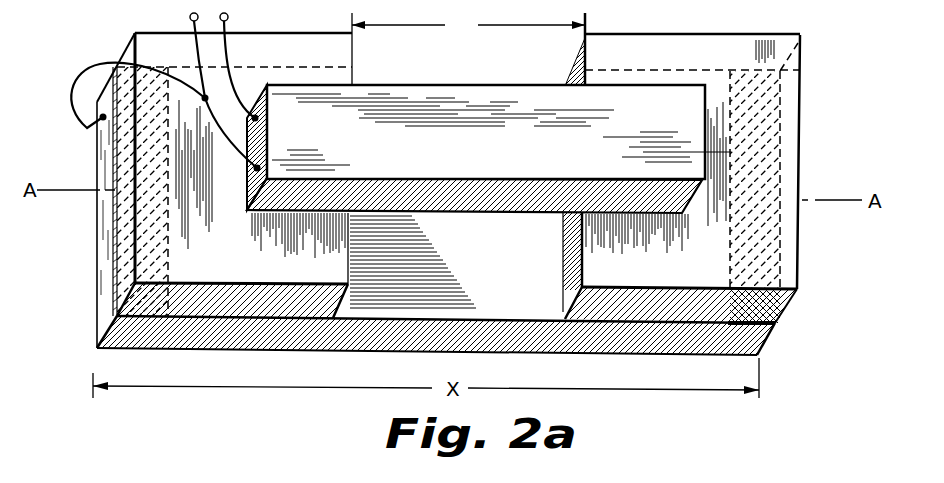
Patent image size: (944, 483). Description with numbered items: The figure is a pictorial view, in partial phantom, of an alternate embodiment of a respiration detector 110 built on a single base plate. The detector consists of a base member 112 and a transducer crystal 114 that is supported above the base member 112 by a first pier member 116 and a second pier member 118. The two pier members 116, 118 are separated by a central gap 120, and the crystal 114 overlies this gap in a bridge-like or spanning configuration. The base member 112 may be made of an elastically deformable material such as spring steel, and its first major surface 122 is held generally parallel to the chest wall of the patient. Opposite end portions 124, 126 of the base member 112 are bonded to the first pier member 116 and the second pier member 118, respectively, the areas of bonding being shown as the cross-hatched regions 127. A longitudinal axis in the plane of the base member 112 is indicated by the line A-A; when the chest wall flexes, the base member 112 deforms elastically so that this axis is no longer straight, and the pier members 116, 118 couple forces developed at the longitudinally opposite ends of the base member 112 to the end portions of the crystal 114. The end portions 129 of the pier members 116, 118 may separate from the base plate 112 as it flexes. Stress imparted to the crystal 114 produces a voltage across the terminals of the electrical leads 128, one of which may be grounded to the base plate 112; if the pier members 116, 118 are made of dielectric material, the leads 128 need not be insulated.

The respiration detector 110 is at (816, 79).
The base member 112 is at (98, 163).
The transducer crystal 114 is at (436, 156).
The first pier member 116 is at (227, 230).
The second pier member 118 is at (690, 262).
The central gap 120 is at (442, 62).
The first major surface 122 is at (97, 230).
The end portion 124 is at (97, 345).
The end portion 126 is at (747, 326).
The areas of bonding 127 is at (758, 110).
The electrical leads 128 is at (190, 28).
The end portions of the pier members 129 is at (350, 260).